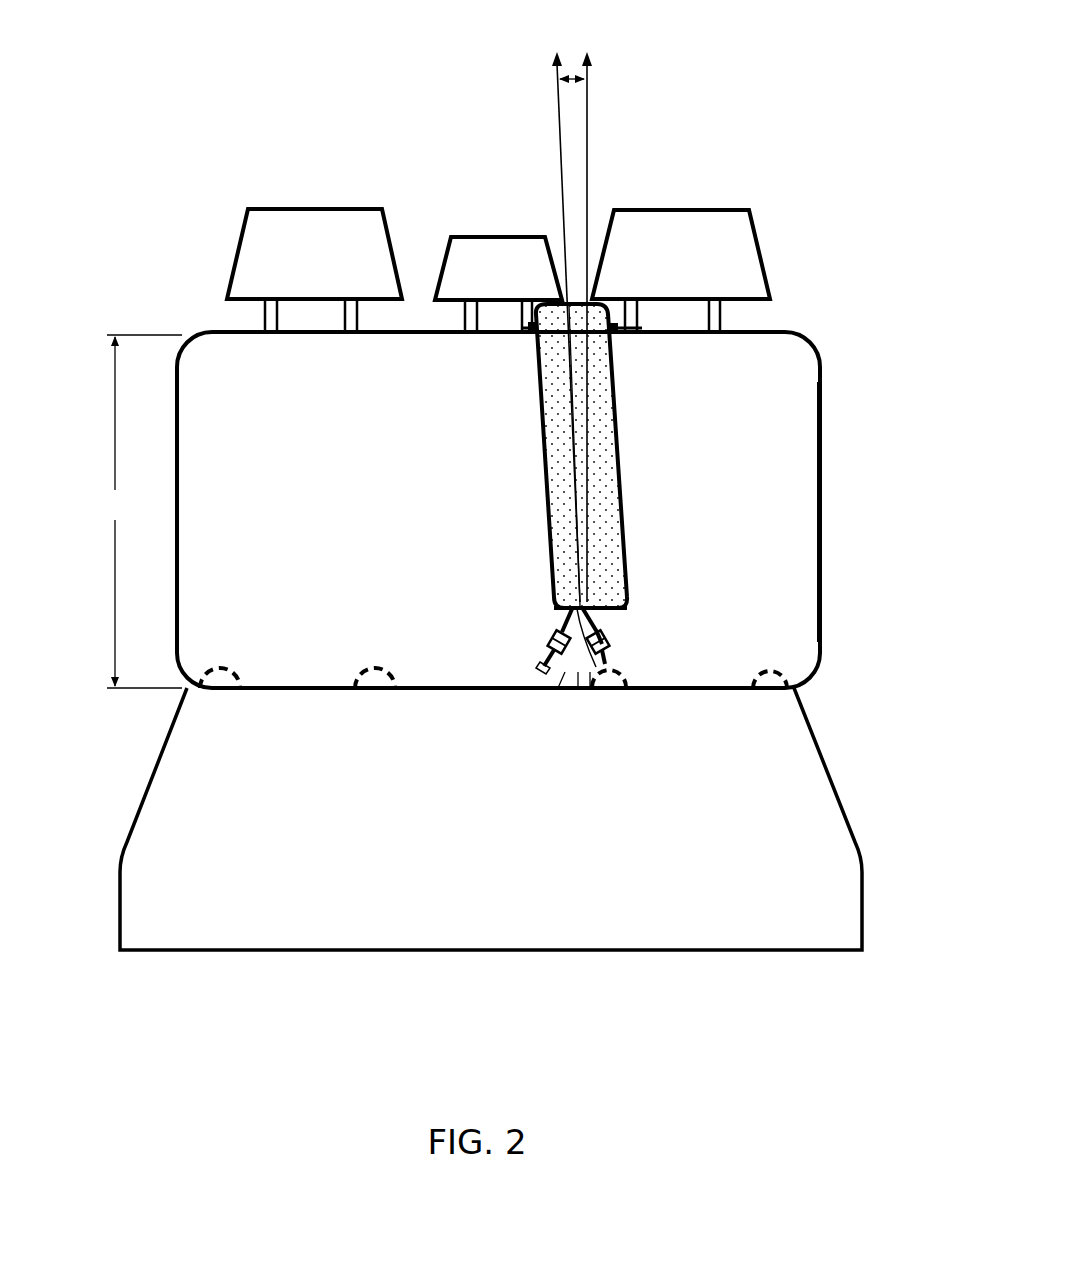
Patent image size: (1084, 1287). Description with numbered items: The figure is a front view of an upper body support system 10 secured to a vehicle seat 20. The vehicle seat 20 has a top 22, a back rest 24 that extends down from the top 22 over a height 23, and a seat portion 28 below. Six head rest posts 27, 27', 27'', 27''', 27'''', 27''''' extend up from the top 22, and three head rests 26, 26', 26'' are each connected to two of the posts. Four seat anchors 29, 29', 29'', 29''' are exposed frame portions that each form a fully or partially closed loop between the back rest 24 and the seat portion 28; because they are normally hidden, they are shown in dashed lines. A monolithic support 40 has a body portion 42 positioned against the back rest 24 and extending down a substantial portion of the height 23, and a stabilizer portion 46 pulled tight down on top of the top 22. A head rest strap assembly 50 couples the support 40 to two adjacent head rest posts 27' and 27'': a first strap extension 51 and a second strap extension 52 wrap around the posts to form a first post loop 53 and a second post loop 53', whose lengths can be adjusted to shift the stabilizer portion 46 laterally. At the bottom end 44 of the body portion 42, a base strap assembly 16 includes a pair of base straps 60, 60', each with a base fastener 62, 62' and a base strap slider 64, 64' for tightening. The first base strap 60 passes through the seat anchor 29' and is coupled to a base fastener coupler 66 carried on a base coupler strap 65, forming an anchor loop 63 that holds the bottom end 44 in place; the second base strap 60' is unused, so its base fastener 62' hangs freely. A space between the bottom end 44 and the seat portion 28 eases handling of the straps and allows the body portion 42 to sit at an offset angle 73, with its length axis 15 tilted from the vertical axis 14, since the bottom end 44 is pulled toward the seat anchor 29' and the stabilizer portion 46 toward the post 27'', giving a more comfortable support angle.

The upper body support system 10 is at (293, 162).
The vertical axis 14 is at (586, 100).
The length axis 15 is at (556, 98).
The base strap assembly 16 is at (576, 686).
The vehicle seat 20 is at (768, 423).
The top 22 is at (765, 330).
The height 23 is at (135, 511).
The back rest 24 is at (768, 498).
The head rest 26 is at (704, 220).
The head rest 26' is at (498, 209).
The head rest 26'' is at (344, 209).
The head rest post 27 is at (766, 284).
The head rest post 27' is at (663, 280).
The head rest post 27'' is at (491, 297).
The head rest post 27''' is at (403, 292).
The head rest post 27'''' is at (297, 355).
The head rest post 27''''' is at (206, 292).
The seat portion 28 is at (755, 795).
The seat anchor 29 is at (827, 644).
The seat anchor 29' is at (671, 668).
The seat anchor 29'' is at (393, 640).
The seat anchor 29''' is at (246, 642).
The support 40 is at (545, 530).
The body portion 42 is at (605, 500).
The bottom end 44 is at (565, 606).
The stabilizer portion 46 is at (532, 300).
The head rest strap assembly 50 is at (525, 328).
The first strap extension 51 is at (640, 330).
The second strap extension 52 is at (530, 330).
The first post loop 53 is at (688, 355).
The second post loop 53' is at (511, 387).
The first base strap 60 is at (662, 638).
The second base strap 60' is at (529, 639).
The base fastener 62 is at (654, 611).
The base fastener 62' is at (538, 673).
The anchor loop 63 is at (588, 686).
The base strap slider 64 is at (643, 577).
The base strap slider 64' is at (524, 666).
The base coupler strap 65 is at (564, 686).
The base fastener coupler 66 is at (610, 630).
The offset angle 73 is at (567, 63).